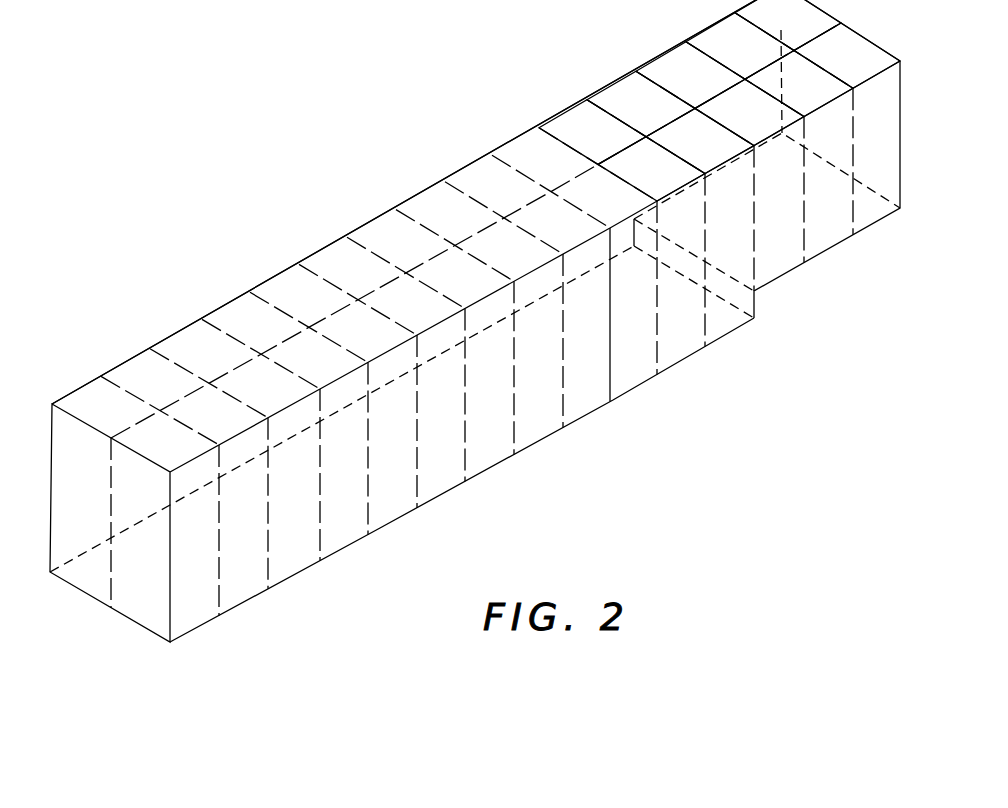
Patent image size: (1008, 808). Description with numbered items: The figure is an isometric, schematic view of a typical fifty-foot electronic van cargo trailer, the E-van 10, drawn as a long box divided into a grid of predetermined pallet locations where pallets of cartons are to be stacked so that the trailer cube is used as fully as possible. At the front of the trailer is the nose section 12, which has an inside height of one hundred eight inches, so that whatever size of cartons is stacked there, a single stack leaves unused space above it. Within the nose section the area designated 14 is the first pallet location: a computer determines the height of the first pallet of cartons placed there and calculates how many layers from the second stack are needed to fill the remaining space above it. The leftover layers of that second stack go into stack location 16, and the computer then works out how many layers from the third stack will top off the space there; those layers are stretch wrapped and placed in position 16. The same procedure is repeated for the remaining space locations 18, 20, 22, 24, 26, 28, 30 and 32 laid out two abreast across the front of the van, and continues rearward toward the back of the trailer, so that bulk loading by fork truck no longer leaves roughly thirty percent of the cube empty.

The E-van 10 is at (192, 243).
The nose section 12 is at (516, 143).
The pallet location 14 is at (768, 29).
The stack location 16 is at (855, 67).
The space location 18 is at (715, 58).
The space location 20 is at (787, 97).
The space location 22 is at (668, 86).
The space location 24 is at (760, 122).
The space location 26 is at (648, 116).
The space location 28 is at (710, 149).
The space location 30 is at (570, 146).
The space location 32 is at (658, 181).